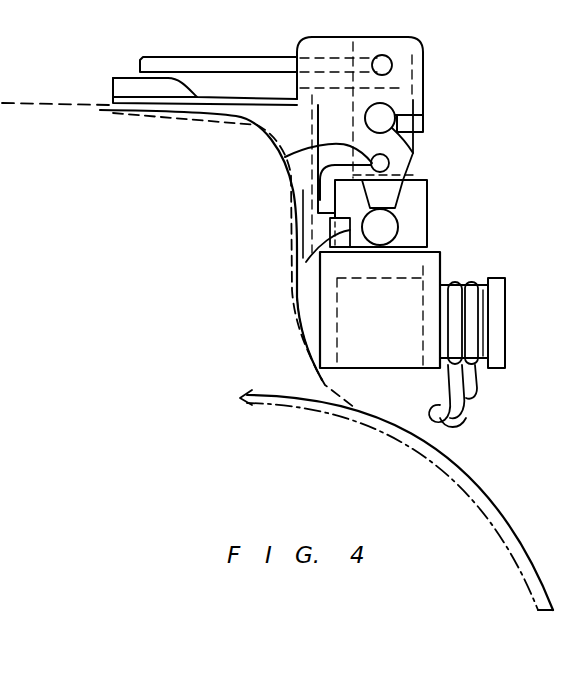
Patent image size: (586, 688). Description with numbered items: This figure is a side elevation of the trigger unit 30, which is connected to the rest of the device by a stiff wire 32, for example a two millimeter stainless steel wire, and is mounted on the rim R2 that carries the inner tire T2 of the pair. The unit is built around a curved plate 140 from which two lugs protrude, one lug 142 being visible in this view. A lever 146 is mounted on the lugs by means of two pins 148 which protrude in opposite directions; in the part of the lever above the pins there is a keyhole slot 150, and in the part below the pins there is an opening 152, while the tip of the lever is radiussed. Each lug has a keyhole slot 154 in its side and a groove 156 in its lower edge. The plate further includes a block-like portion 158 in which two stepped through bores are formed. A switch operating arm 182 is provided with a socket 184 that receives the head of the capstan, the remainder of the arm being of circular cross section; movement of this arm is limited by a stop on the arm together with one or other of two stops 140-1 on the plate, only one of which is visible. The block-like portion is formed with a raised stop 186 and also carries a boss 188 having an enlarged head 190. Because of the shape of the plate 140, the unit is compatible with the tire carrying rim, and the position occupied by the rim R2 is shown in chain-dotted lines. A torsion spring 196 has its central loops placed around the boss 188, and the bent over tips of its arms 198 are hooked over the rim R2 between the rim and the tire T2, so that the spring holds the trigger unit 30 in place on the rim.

The trigger unit 30 is at (278, 328).
The stiff wire 32 is at (248, 57).
The lug 142 is at (418, 50).
The keyhole slot 150 is at (382, 55).
The keyhole slot 154 is at (418, 106).
The lever 146 is at (410, 120).
The pin 148 is at (390, 168).
The groove 156 is at (287, 157).
The opening 152 is at (340, 192).
The curved plate 140 is at (292, 215).
The stop 140-1 is at (297, 284).
The socket 184 is at (427, 196).
The switch operating arm 182 is at (398, 227).
The raised stop 186 is at (410, 250).
The block-like portion 158 is at (443, 262).
The torsion spring 196 is at (470, 283).
The enlarged head 190 is at (507, 369).
The boss 188 is at (470, 375).
The arms of the torsion spring 198 is at (468, 425).
The rim R2 is at (324, 378).
The inner tire T2 is at (483, 510).